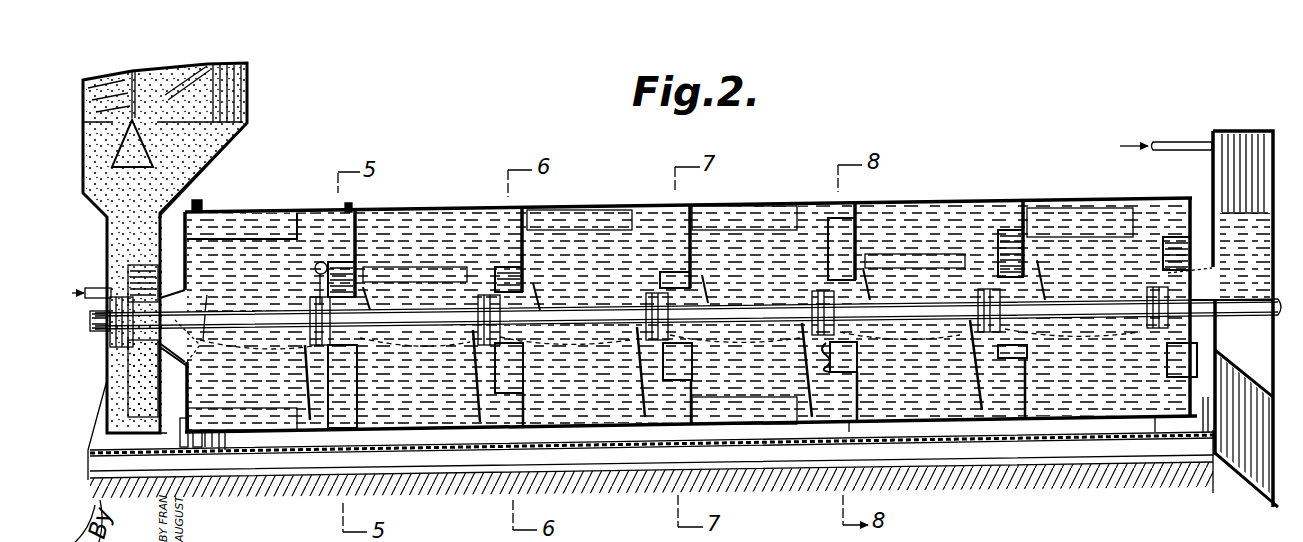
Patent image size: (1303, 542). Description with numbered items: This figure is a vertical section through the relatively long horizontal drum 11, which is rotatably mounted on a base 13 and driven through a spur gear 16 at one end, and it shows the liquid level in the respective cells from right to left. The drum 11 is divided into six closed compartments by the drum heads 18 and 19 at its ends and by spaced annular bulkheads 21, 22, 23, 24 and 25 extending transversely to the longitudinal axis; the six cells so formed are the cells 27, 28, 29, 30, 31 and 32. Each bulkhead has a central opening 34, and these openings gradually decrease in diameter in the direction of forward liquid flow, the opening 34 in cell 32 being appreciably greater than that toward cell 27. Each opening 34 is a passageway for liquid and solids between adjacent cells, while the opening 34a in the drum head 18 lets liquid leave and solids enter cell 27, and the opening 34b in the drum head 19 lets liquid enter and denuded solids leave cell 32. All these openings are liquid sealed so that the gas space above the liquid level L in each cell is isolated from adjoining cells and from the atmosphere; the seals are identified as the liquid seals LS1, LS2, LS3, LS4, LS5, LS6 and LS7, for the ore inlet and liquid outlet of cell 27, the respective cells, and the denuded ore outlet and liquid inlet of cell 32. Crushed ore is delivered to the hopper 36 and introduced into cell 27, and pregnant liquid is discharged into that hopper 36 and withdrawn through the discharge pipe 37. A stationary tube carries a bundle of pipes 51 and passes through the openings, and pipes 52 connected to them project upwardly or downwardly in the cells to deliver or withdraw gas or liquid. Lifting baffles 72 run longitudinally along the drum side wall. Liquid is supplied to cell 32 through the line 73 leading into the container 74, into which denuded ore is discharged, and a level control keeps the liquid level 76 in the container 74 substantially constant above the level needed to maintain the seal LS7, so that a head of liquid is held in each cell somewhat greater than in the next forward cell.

The drum 11 is at (932, 197).
The base 13 is at (617, 460).
The spur gear 16 is at (203, 447).
The drum head 18 is at (182, 266).
The drum head 19 is at (1188, 197).
The annular bulkhead 21 is at (360, 232).
The annular bulkhead 22 is at (534, 213).
The annular bulkhead 23 is at (693, 212).
The annular bulkhead 24 is at (861, 220).
The annular bulkhead 25 is at (1030, 226).
The cell 27 is at (280, 273).
The cell 28 is at (457, 260).
The cell 29 is at (662, 258).
The cell 30 is at (790, 260).
The cell 31 is at (957, 240).
The cell 32 is at (1165, 233).
The central opening 34 is at (670, 370).
The opening 34a is at (197, 290).
The opening 34b is at (1220, 284).
The hopper 36 is at (242, 138).
The discharge pipe 37 is at (103, 292).
The pipes 51 is at (101, 333).
The pipes 52 is at (205, 296).
The lifting baffles 72 is at (592, 230).
The line 73 is at (1160, 142).
The container 74 is at (1245, 131).
The level of liquid 76 is at (1263, 207).
The liquid level L is at (252, 292).
The liquid seal LS1 is at (242, 226).
The liquid seal LS2 is at (367, 287).
The liquid seal LS3 is at (535, 290).
The liquid seal LS4 is at (704, 287).
The liquid seal LS5 is at (868, 283).
The liquid seal LS6 is at (1032, 285).
The liquid seal LS7 is at (1240, 266).